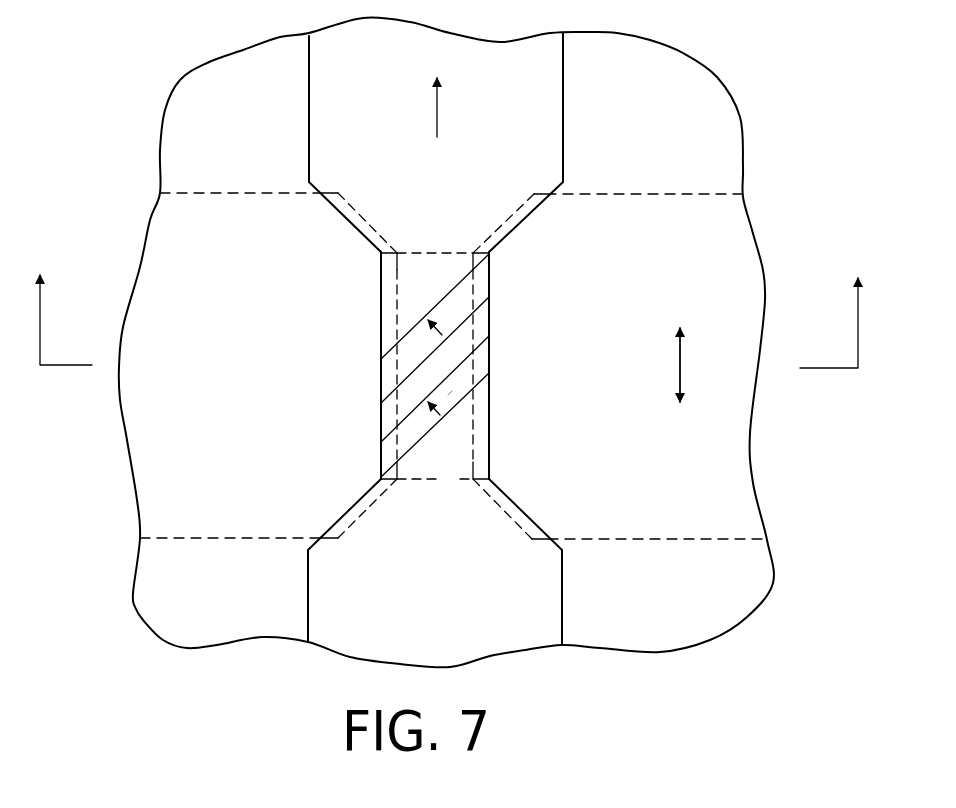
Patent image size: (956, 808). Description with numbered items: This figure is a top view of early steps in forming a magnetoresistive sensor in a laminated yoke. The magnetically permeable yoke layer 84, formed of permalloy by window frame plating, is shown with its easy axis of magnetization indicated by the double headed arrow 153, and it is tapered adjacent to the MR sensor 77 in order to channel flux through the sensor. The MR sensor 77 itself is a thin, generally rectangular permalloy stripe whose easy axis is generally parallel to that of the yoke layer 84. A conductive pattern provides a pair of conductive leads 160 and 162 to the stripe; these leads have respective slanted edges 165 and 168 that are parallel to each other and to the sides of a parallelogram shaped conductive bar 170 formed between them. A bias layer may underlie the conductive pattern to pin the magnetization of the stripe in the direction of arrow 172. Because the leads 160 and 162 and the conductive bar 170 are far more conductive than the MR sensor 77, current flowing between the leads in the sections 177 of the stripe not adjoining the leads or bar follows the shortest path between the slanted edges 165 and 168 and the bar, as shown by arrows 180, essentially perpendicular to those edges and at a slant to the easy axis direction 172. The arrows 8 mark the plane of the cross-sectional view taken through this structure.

The arrows 8— 8 is at (449, 302).
The MR sensor 77 is at (381, 377).
The magnetically permeable yoke layer 84 is at (257, 192).
The double headed arrow 153 is at (680, 368).
The conductive lead 160 is at (563, 92).
The conductive lead 162 is at (563, 603).
The slanted edge 165 is at (445, 300).
The slanted edge 168 is at (407, 447).
The conductive bar 170 is at (430, 377).
The arrow 172 is at (437, 116).
The sections of the MR stripe 177 is at (412, 348).
The arrows 180 is at (442, 335).